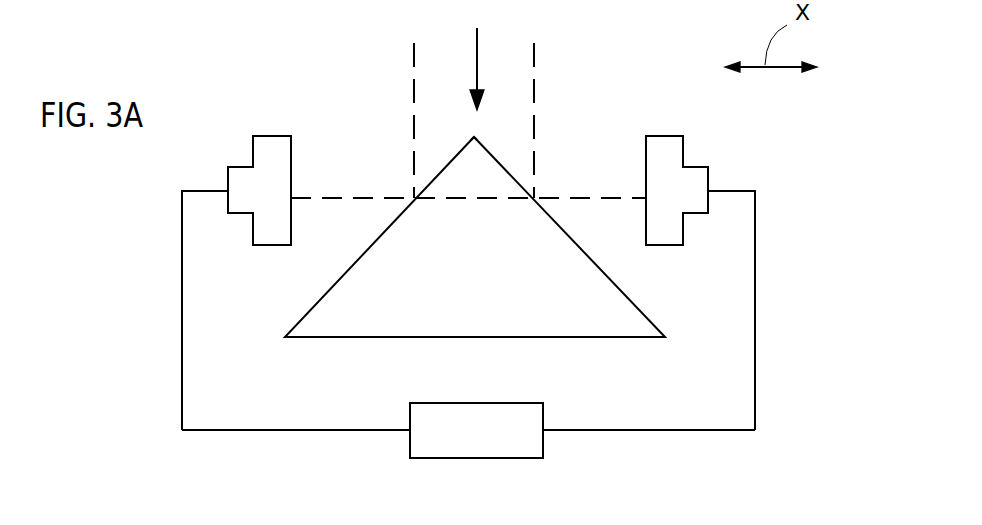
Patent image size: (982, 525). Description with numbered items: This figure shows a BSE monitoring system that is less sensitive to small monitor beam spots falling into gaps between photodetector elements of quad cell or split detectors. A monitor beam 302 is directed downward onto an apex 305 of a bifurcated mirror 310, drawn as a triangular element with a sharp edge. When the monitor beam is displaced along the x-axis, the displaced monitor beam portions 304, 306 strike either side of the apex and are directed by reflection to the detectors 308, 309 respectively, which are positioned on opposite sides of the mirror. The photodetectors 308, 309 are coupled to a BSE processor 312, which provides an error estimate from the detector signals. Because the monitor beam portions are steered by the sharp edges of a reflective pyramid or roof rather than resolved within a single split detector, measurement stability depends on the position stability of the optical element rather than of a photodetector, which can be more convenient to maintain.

The monitor beam 302 is at (478, 50).
The monitor beam portion 304 is at (535, 97).
The apex 305 is at (475, 140).
The monitor beam portion 306 is at (412, 90).
The detector 308 is at (678, 135).
The detector 309 is at (260, 135).
The bifurcated mirror 310 is at (647, 317).
The BSE processor 312 is at (527, 403).